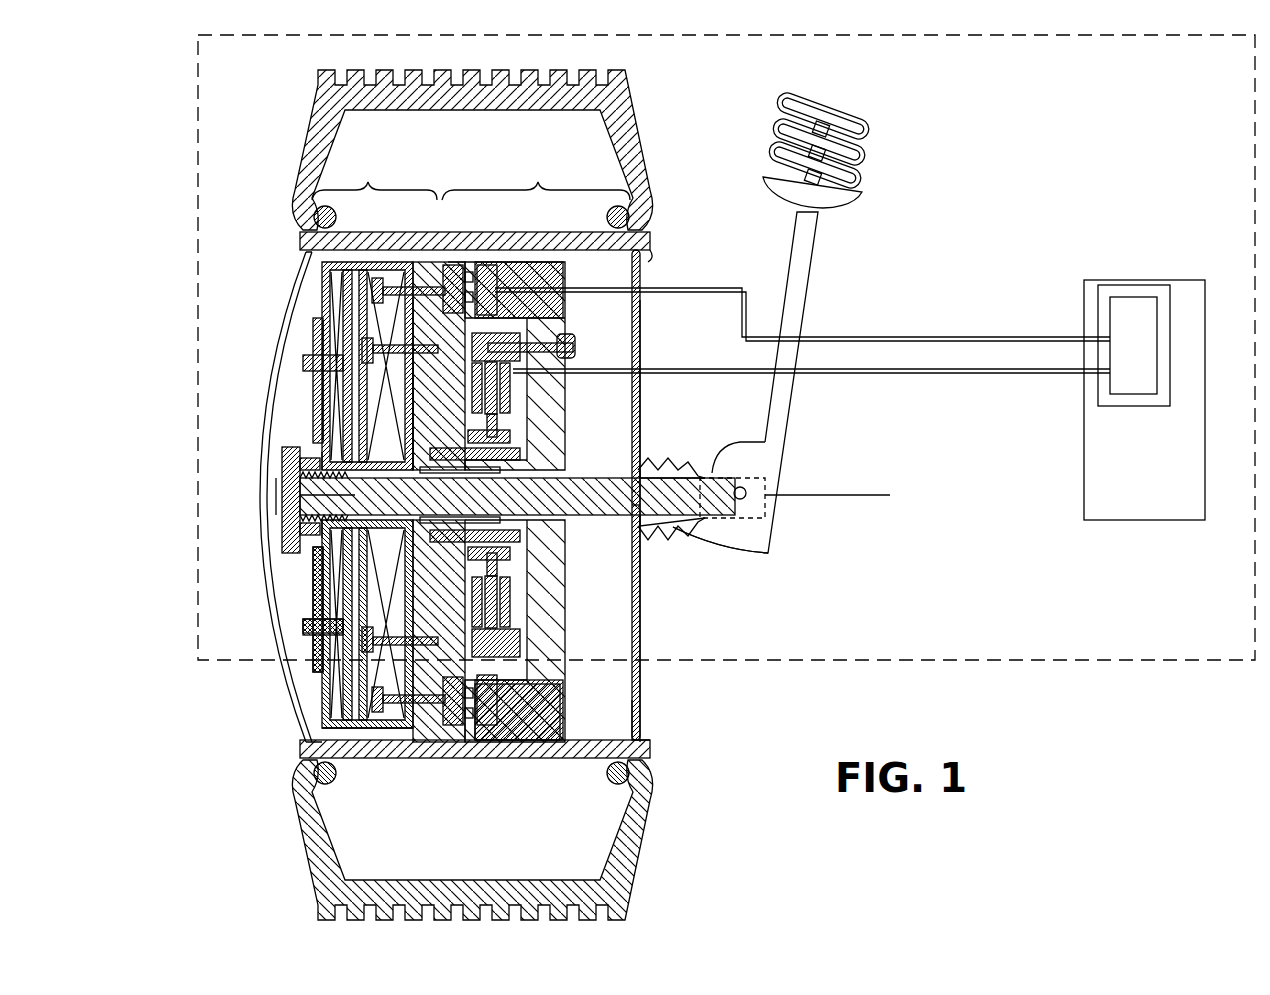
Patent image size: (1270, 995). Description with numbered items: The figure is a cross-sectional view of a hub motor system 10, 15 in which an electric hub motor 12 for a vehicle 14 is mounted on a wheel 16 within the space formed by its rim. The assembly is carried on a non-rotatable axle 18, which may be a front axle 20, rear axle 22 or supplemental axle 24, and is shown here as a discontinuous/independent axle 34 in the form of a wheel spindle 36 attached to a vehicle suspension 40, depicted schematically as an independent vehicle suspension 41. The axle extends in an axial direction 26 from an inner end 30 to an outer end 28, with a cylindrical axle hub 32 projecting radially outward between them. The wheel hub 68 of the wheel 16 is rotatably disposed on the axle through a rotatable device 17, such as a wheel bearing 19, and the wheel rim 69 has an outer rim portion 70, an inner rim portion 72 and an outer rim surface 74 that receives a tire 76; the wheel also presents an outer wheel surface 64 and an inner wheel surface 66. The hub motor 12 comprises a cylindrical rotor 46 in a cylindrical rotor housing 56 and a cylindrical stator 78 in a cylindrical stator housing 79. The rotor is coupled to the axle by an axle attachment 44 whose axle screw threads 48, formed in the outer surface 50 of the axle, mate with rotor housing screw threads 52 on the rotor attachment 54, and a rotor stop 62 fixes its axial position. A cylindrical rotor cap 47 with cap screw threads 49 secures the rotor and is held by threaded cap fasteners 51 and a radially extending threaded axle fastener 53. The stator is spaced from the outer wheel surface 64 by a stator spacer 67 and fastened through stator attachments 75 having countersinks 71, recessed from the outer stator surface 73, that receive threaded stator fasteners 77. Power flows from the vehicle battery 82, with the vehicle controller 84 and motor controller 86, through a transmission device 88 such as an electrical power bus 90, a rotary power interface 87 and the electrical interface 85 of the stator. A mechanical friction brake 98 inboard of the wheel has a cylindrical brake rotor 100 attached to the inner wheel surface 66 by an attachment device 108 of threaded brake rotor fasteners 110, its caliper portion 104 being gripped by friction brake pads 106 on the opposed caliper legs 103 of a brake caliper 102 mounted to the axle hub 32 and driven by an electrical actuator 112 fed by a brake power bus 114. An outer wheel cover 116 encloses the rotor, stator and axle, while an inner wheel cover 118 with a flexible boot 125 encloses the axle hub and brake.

The hub motor system 10 is at (677, 487).
The electric hub motor 15 is at (677, 487).
The hub motor 12 is at (342, 544).
The vehicle 14 is at (533, 28).
The wheel 16 is at (652, 223).
The rotatable device 17 is at (524, 502).
The wheel bearing 19 is at (522, 404).
The non-rotatable axle 18 is at (624, 464).
The front axle 20 is at (725, 558).
The rear axle 22 is at (725, 558).
The supplemental axle 24 is at (674, 538).
The axial direction 26 is at (865, 490).
The outer end 28 is at (284, 505).
The inner end 30 is at (768, 480).
The cylindrical axle hub 32 is at (641, 711).
The discontinuous/independent axle 34 is at (694, 447).
The wheel spindle 36 is at (646, 472).
The vehicle suspension 40 is at (791, 321).
The independent vehicle suspension 41 is at (792, 412).
The axle attachment 44 is at (355, 495).
The cylindrical rotor 46 is at (315, 336).
The cylindrical rotor cap 47 is at (312, 522).
The axle screw threads 48 is at (316, 530).
The cap screw threads 49 is at (284, 478).
The outer surface 50 is at (634, 508).
The threaded cap fasteners 51 is at (322, 626).
The rotor housing screw threads 52 is at (300, 456).
The threaded axle fastener 53 is at (284, 525).
The rotor attachment 54 is at (315, 425).
The cylindrical rotor housing 56 is at (325, 290).
The rotor stop 62 is at (426, 434).
The outer wheel surface 64 is at (330, 722).
The inner wheel surface 66 is at (560, 690).
The stator spacer 67 is at (405, 686).
The wheel hub 68 is at (540, 636).
The wheel rim 69 is at (656, 239).
The outer rim portion 70 is at (374, 181).
The countersinks 71 is at (372, 656).
The inner rim portion 72 is at (536, 181).
The outer stator surface 73 is at (378, 266).
The outer rim surface 74 is at (448, 252).
The stator attachments 75 is at (375, 616).
The tire 76 is at (622, 95).
The threaded stator fasteners 77 is at (410, 650).
The cylindrical stator 78 is at (410, 336).
The cylindrical stator housing 79 is at (418, 392).
The vehicle battery 82 is at (1100, 522).
The vehicle controller 84 is at (1138, 408).
The electrical interface 85 is at (410, 262).
The motor controller 86 is at (1133, 345).
The rotary power interface 87 is at (469, 256).
The electrical power and/or signal transmission device 88 is at (802, 308).
The electrical power bus 90 is at (974, 330).
The mechanical friction brake 98 is at (514, 404).
The cylindrical brake rotor 100 is at (522, 536).
The brake caliper 102 is at (540, 339).
The opposed caliper legs 103 is at (577, 347).
The caliper portion 104 is at (512, 570).
The friction brake pads 106 is at (520, 380).
The attachment device 108 is at (522, 453).
The threaded brake rotor fasteners 110 is at (522, 463).
The electrical actuator 112 is at (540, 372).
The brake power bus 114 is at (955, 372).
The outer wheel cover 116 is at (300, 278).
The inner wheel cover 118 is at (643, 622).
The flexible boot 125 is at (769, 553).